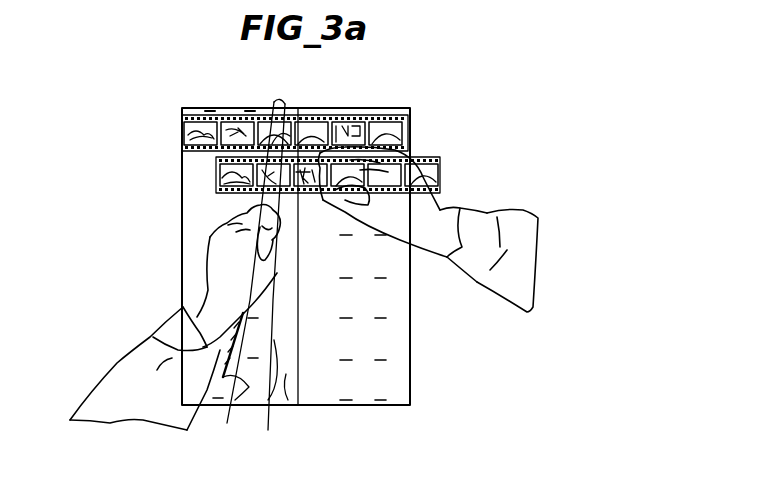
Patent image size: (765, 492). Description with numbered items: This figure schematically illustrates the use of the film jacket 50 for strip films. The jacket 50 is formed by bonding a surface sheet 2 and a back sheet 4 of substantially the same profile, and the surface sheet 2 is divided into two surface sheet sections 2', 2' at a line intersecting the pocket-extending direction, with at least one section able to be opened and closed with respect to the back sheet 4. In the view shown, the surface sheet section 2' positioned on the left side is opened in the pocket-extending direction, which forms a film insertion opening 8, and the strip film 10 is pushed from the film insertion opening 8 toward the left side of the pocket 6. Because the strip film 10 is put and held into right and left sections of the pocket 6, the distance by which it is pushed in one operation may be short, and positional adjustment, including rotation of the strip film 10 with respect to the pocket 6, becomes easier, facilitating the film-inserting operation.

The surface sheet 2 is at (313, 256).
The surface sheet section 2' is at (231, 385).
The back sheet 4 is at (288, 400).
The pocket 6 is at (382, 380).
The film insertion opening 8 is at (270, 412).
The strip film 10 is at (428, 157).
The jacket 50 is at (228, 88).